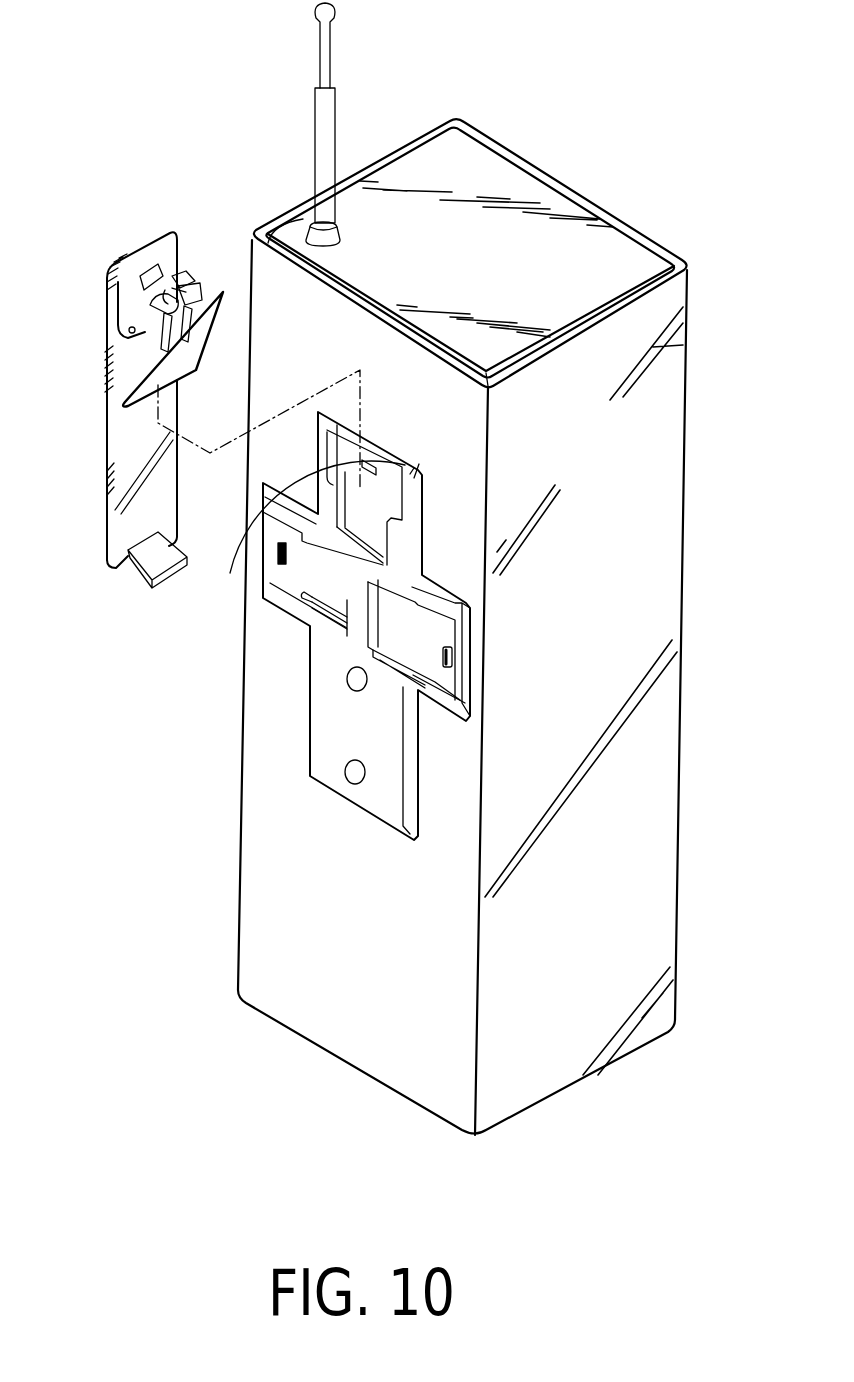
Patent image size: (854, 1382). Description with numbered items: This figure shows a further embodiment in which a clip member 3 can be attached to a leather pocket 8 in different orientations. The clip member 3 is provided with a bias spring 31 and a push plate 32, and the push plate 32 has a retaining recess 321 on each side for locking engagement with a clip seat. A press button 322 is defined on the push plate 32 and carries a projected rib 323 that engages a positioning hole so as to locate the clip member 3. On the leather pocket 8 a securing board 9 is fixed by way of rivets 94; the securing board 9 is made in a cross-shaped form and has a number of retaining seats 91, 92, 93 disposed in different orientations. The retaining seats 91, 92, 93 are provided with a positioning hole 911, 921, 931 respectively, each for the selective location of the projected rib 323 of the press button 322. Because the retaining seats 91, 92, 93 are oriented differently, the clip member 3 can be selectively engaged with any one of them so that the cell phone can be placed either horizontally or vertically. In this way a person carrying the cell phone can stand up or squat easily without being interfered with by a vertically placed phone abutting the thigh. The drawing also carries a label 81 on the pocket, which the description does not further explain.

The clip member 3 is at (148, 385).
The bias spring 31 is at (142, 288).
The push plate 32 is at (178, 365).
The retaining recess 321 is at (204, 300).
The press button 322 is at (198, 300).
The projected rib 323 is at (185, 328).
The leather pocket 8 is at (673, 575).
The side wall 81 is at (257, 892).
The securing board 9 is at (322, 722).
The retaining seat 91 is at (367, 518).
The positioning hole 911 is at (355, 470).
The retaining seat 92 is at (330, 560).
The positioning hole 921 is at (290, 576).
The retaining seat 93 is at (432, 632).
The positioning hole 931 is at (455, 657).
The rivets 94 is at (355, 770).